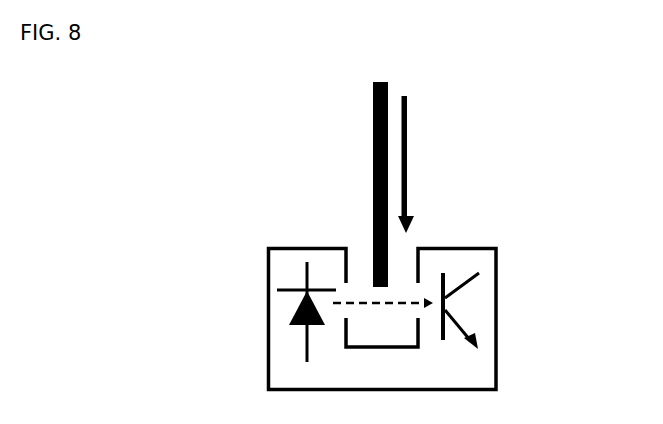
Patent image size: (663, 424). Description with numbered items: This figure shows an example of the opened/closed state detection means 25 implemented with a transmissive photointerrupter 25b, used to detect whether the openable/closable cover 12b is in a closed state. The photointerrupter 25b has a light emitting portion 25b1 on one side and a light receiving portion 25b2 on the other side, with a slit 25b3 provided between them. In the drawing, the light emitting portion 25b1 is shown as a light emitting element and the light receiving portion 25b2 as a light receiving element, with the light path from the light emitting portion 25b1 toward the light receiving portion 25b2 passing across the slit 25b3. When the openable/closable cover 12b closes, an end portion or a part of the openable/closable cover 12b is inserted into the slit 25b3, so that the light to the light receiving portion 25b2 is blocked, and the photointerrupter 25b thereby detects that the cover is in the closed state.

The openable/closable cover 12b is at (368, 115).
The opened/closed state detection means 25 is at (492, 223).
The photointerrupter 25b is at (500, 348).
The light emitting portion 25b1 is at (280, 315).
The light receiving portion 25b2 is at (485, 279).
The slit 25b3 is at (358, 247).